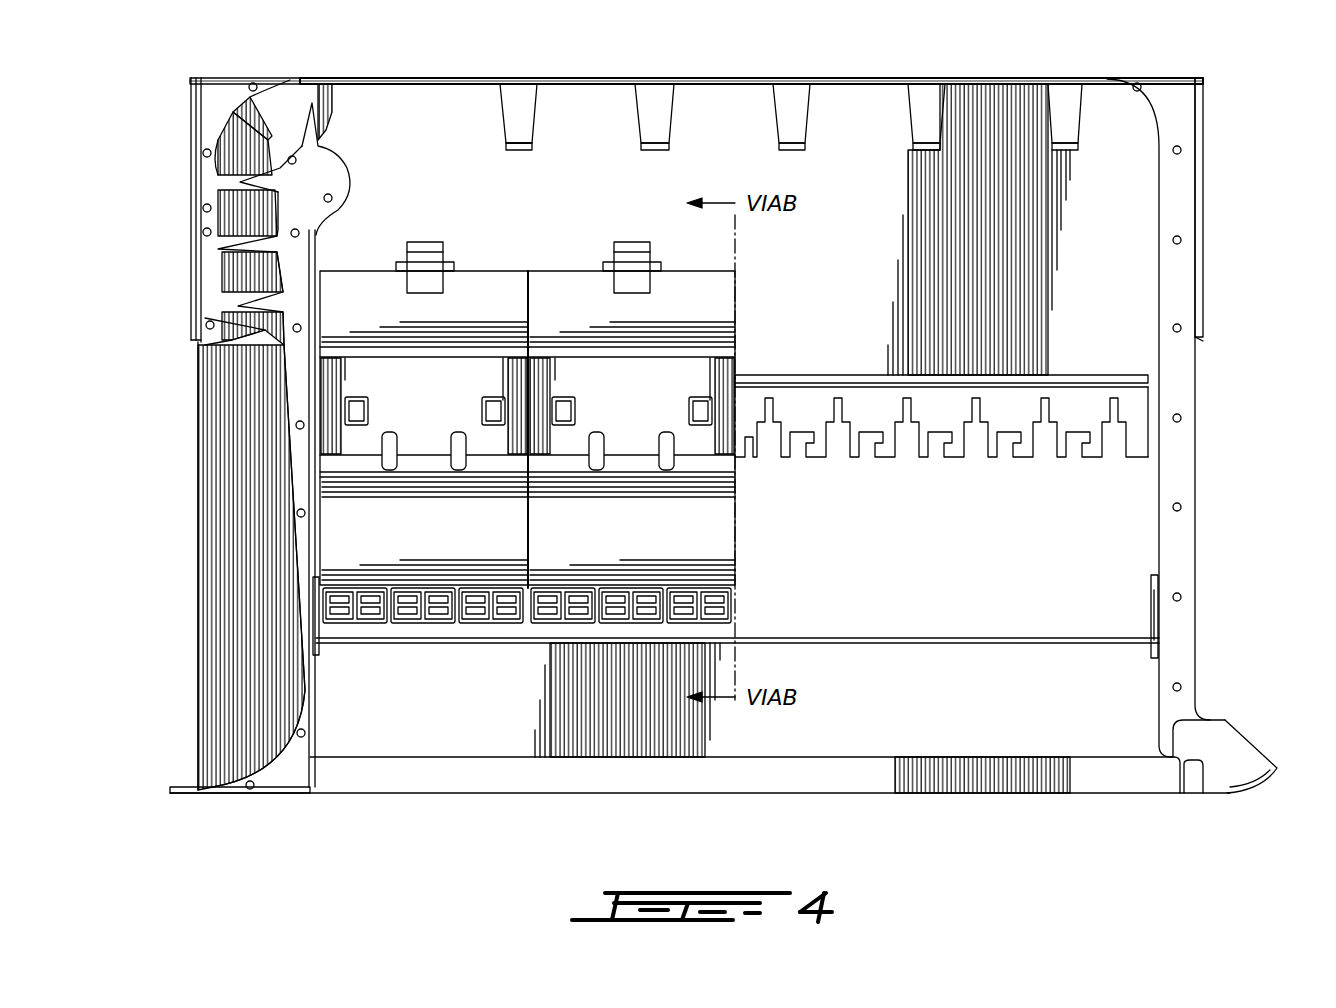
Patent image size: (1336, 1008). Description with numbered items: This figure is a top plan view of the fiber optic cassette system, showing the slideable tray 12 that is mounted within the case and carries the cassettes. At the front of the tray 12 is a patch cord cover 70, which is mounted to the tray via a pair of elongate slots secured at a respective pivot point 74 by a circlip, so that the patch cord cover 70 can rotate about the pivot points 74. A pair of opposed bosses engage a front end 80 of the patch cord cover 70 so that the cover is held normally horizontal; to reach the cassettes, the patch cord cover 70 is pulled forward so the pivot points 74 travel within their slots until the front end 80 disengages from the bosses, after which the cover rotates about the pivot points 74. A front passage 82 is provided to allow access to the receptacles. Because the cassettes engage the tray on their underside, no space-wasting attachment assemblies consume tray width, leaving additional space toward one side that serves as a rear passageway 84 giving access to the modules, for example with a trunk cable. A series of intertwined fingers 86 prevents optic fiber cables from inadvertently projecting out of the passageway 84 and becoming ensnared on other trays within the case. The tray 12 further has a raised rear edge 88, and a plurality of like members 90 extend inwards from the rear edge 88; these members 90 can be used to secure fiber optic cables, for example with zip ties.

The slideable tray 12 is at (1160, 377).
The patch cord cover 70 is at (1005, 782).
The pivot point 74 is at (318, 643).
The front end 80 is at (531, 777).
The front passage 82 is at (1240, 752).
The rear passageway 84 is at (252, 288).
The intertwined fingers 86 is at (268, 133).
The raised rear edge 88 is at (845, 77).
The members 90 is at (1062, 118).